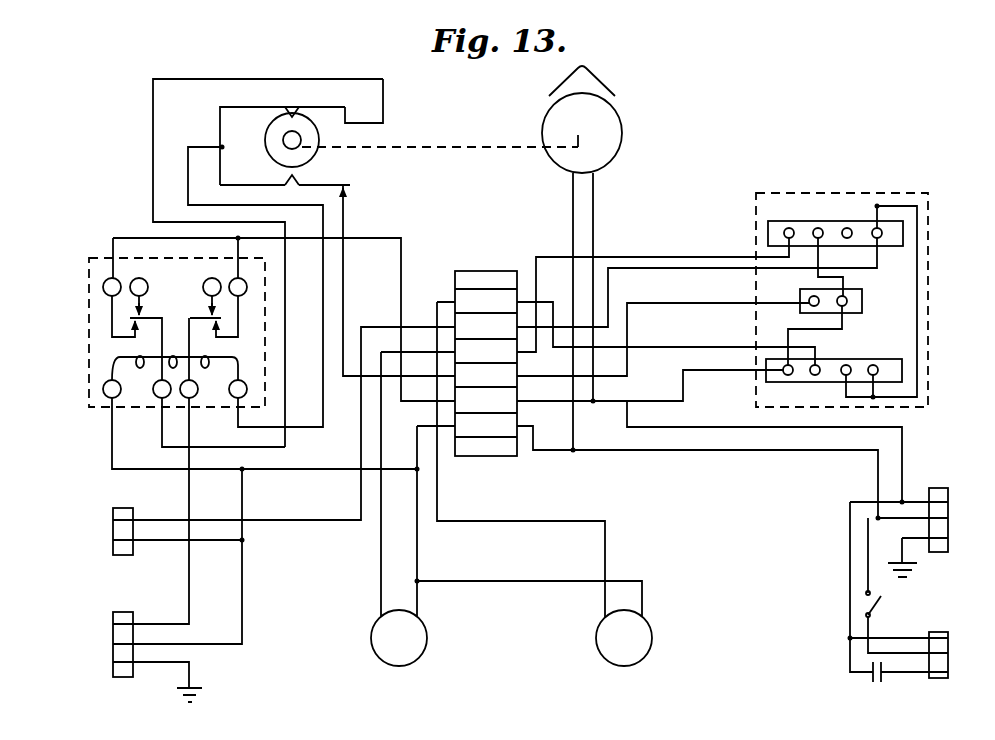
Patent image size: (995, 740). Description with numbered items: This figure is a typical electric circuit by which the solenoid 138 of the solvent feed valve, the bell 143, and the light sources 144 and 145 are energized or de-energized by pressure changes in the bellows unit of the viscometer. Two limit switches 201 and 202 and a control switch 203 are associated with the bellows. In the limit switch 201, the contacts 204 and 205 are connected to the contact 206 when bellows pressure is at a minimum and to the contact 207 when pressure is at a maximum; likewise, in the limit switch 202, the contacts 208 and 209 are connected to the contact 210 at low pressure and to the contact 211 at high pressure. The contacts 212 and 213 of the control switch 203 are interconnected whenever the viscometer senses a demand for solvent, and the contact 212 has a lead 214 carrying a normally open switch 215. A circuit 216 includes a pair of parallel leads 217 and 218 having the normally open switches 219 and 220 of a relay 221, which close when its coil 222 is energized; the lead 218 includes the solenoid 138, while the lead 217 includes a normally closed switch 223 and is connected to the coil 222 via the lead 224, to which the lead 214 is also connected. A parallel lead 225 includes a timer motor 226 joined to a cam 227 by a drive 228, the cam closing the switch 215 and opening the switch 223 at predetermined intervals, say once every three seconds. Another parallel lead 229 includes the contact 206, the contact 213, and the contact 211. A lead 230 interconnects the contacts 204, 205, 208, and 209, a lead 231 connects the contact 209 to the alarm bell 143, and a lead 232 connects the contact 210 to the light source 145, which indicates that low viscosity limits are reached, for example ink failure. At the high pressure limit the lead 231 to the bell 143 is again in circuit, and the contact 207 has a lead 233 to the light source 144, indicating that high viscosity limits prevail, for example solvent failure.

The solenoid 138 is at (113, 621).
The bell 143 is at (113, 523).
The light source 144 is at (402, 663).
The light source 145 is at (620, 661).
The limit switch 201 is at (805, 386).
The limit switch 202 is at (796, 217).
The control switch 203 is at (868, 305).
The contact 204 is at (862, 353).
The contact 205 is at (880, 368).
The contact 206 is at (785, 376).
The contact 207 is at (816, 384).
The contact 208 is at (847, 227).
The contact 209 is at (883, 233).
The contact 210 is at (783, 233).
The contact 211 is at (818, 227).
The contact 212 is at (810, 298).
The contact 213 is at (846, 297).
The lead 214 is at (345, 291).
The normally open switch 215 is at (337, 185).
The circuit 216 is at (390, 231).
The lead 217 is at (162, 434).
The lead 218 is at (188, 489).
The normally open switch 219 is at (165, 306).
The normally open switch 220 is at (200, 313).
The relay 221 is at (86, 340).
The coil 222 is at (132, 358).
The normally closed switch 223 is at (352, 112).
The lead 224 is at (316, 431).
The lead 225 is at (593, 232).
The timer motor 226 is at (614, 157).
The cam 227 is at (268, 159).
The drive 228 is at (460, 146).
The lead 229 is at (683, 384).
The lead 230 is at (928, 291).
The lead 231 is at (686, 270).
The lead 232 is at (668, 250).
The lead 233 is at (720, 347).